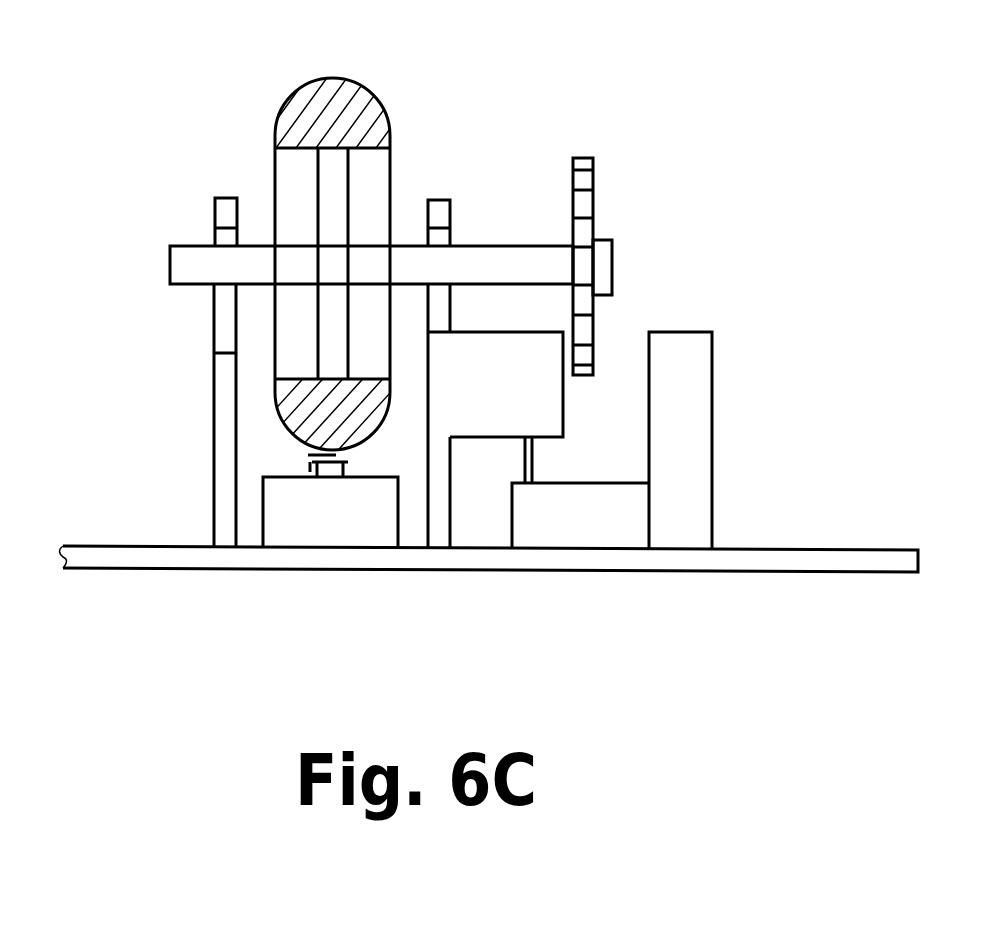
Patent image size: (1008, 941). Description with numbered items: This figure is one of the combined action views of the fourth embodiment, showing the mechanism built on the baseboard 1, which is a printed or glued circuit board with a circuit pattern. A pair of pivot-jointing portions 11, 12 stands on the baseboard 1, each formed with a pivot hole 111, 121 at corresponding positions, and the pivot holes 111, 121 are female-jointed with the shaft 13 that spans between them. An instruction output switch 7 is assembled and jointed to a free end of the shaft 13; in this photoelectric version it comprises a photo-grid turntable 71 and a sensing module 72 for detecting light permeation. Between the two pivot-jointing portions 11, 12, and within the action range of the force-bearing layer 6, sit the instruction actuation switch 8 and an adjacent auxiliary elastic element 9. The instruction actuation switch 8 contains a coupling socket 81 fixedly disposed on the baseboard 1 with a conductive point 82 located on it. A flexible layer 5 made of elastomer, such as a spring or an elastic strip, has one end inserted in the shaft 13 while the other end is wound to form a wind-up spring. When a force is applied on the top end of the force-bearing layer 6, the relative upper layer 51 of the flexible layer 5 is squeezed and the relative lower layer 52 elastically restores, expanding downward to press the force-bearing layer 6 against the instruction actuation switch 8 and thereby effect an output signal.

The baseboard 1 is at (822, 557).
The flexible layer 5 is at (352, 187).
The force-bearing layer 6 is at (327, 118).
The instruction output switch 7 is at (632, 283).
The instruction actuation switch 8 is at (257, 523).
The auxiliary elastic element 9 is at (313, 467).
The pivot-jointing portion 11 is at (222, 513).
The pivot-jointing portion 12 is at (437, 508).
The shaft 13 is at (180, 267).
The relative upper layer 51 is at (323, 190).
The relative lower layer 52 is at (333, 358).
The photo-grid turntable 71 is at (588, 202).
The sensing module 72 is at (512, 390).
The coupling socket 81 is at (368, 522).
The conductive point 82 is at (333, 478).
The pivot hole 111 is at (212, 238).
The pivot hole 121 is at (452, 242).